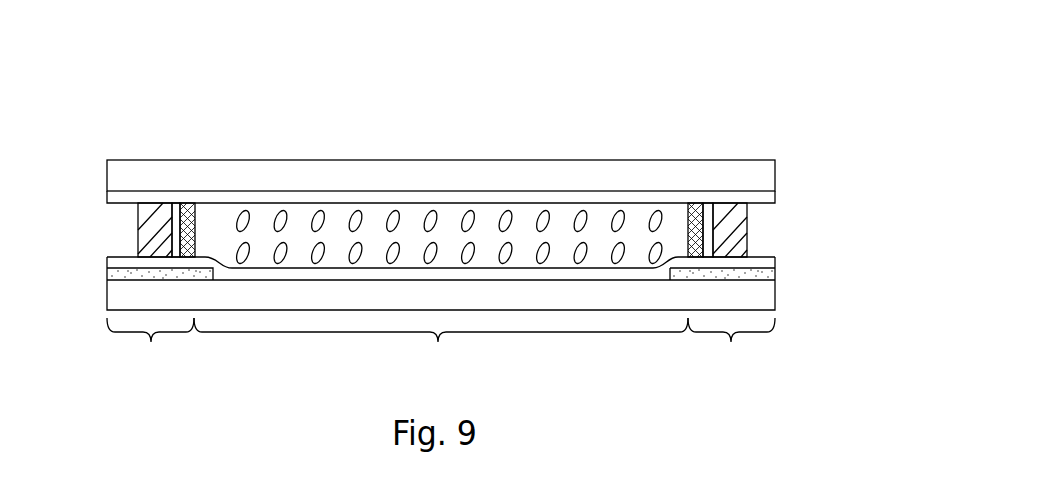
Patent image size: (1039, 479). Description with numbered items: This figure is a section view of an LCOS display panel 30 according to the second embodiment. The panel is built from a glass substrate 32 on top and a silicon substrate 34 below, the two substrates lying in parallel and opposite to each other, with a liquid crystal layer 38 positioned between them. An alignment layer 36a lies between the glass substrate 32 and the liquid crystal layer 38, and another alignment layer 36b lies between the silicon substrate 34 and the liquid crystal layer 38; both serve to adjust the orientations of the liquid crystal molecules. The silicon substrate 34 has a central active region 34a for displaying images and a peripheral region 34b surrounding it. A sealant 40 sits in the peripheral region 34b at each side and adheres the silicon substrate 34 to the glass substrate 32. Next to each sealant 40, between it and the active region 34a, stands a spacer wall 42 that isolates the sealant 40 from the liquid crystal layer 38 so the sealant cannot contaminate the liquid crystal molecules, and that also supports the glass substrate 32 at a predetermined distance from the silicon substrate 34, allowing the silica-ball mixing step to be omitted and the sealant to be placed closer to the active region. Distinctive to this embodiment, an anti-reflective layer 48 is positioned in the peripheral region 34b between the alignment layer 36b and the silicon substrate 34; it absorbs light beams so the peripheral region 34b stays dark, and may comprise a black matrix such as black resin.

The LCOS display panel 30 is at (779, 84).
The glass substrate 32 is at (768, 173).
The silicon substrate 34 is at (112, 298).
The active region 34a is at (441, 349).
The peripheral region 34b is at (441, 349).
The alignment layer 36a is at (768, 200).
The alignment layer 36b is at (768, 258).
The liquid crystal layer 38 is at (407, 226).
The sealant 40 is at (150, 223).
The spacer wall 42 is at (190, 203).
The anti-reflective layer 48 is at (113, 273).